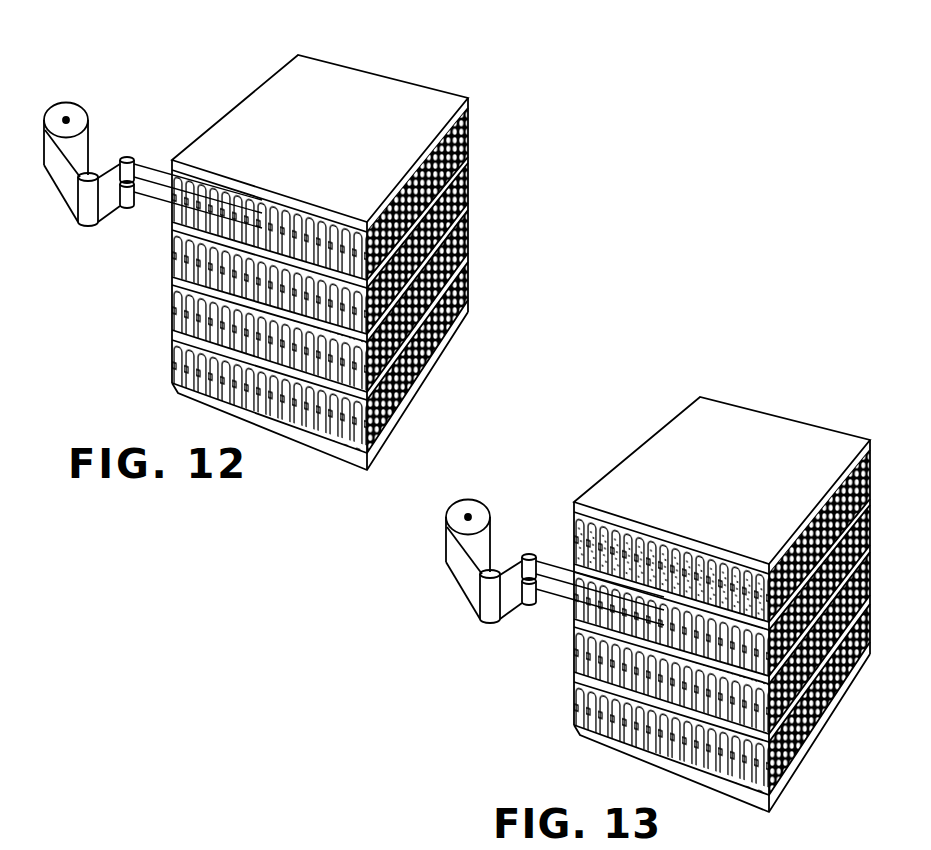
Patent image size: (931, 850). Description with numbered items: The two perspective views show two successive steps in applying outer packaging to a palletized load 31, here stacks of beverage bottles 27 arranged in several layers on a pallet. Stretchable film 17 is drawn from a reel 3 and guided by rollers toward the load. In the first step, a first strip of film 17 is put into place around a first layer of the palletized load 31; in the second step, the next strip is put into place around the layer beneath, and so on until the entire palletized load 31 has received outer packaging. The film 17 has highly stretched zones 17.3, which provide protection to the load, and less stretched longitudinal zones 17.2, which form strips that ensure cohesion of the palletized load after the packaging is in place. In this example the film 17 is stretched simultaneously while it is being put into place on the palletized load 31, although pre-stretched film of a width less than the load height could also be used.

In FIG. 12, the reel 3 is at (86, 110).
In FIG. 13, the reel 3 is at (486, 500).
In FIG. 12, the film 17 is at (133, 199).
In FIG. 13, the film 17 is at (526, 617).
In FIG. 12, the less stretched longitudinal zones 17.2 is at (152, 186).
In FIG. 13, the less stretched longitudinal zones 17.2 is at (560, 585).
In FIG. 12, the highly stretched zones 17.3 is at (148, 200).
In FIG. 13, the highly stretched zones 17.3 is at (547, 595).
In FIG. 12, the beverage bottles 27 is at (175, 295).
In FIG. 13, the beverage bottles 27 is at (577, 526).
In FIG. 12, the palletized load 31 is at (311, 244).
In FIG. 13, the palletized load 31 is at (695, 566).